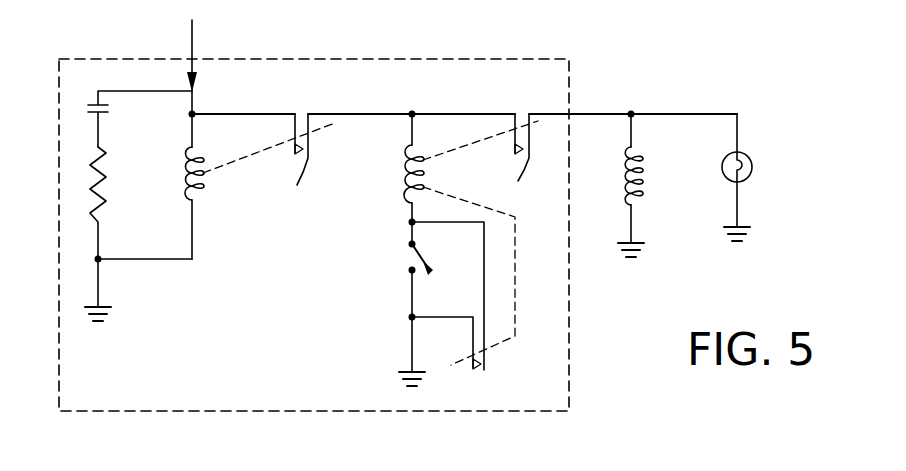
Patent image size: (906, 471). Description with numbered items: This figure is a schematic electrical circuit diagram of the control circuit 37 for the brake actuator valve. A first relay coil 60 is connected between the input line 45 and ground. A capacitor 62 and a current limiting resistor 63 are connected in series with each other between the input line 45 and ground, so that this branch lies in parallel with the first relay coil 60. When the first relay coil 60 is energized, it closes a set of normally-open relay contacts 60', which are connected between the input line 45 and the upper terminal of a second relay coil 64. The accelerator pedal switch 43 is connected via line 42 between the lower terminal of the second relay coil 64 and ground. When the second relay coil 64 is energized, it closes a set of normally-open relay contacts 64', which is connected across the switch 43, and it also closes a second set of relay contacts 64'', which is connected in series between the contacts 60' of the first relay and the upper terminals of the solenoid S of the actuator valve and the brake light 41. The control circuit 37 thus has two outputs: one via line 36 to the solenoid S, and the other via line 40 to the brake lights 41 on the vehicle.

The control circuit 37 is at (295, 412).
The input line 45 is at (192, 36).
The capacitor 62 is at (110, 110).
The current limiting resistor 63 is at (106, 190).
The first relay coil 60 is at (217, 186).
The relay contacts 60' is at (269, 162).
The second relay coil 64 is at (391, 168).
The second set of relay contacts 64'' is at (480, 156).
The relay contacts 64' is at (476, 290).
The line 42 is at (410, 222).
The accelerator pedal switch 43 is at (411, 250).
The line 36 is at (633, 135).
The solenoid S is at (641, 182).
The line 40 is at (739, 138).
The brake lights 41 is at (752, 168).